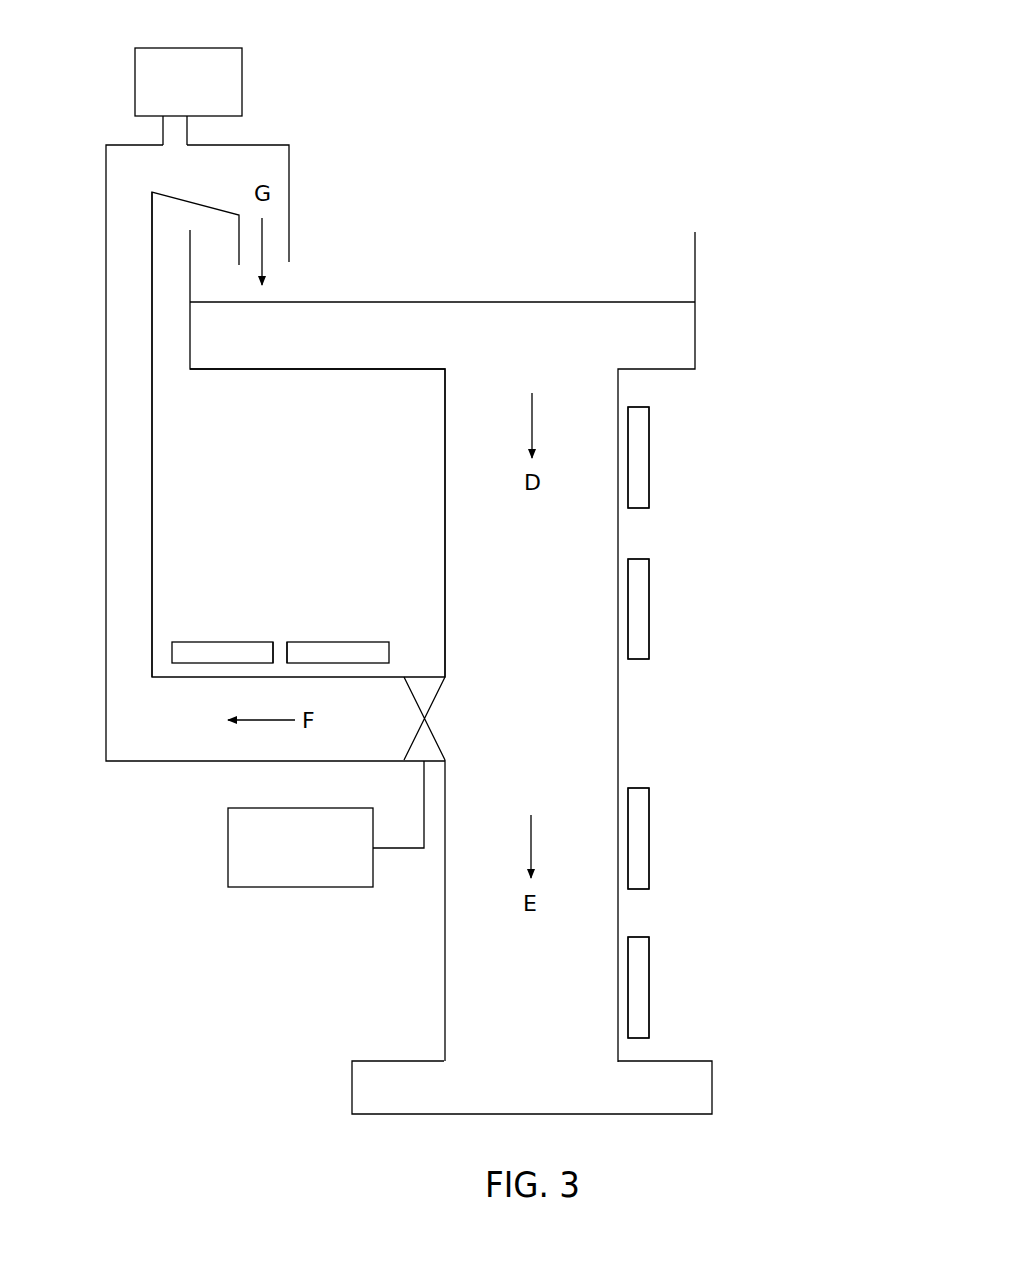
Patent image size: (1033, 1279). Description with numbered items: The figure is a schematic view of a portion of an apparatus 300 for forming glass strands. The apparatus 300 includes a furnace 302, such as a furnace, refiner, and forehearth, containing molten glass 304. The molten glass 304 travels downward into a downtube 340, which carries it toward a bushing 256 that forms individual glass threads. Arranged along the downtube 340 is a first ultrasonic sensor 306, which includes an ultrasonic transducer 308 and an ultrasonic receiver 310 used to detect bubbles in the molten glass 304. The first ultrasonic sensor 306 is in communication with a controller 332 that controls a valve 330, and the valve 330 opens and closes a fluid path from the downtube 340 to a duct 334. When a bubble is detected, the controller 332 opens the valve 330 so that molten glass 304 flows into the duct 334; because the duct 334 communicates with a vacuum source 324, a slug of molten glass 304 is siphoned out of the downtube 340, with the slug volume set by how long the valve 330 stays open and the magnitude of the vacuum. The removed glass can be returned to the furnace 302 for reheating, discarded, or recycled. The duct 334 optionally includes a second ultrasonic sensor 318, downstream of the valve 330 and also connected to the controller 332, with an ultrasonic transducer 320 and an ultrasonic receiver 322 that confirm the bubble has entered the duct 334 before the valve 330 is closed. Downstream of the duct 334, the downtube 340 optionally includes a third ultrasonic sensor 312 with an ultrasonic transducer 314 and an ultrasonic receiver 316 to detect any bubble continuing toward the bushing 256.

The apparatus 300 is at (463, 78).
The furnace 302 is at (477, 250).
The molten glass 304 is at (542, 312).
The first ultrasonic sensor 306 is at (670, 530).
The ultrasonic transducer 308 is at (637, 467).
The ultrasonic receiver 310 is at (637, 607).
The third ultrasonic sensor 312 is at (670, 916).
The ultrasonic transducer 314 is at (637, 841).
The ultrasonic receiver 316 is at (637, 980).
The second ultrasonic sensor 318 is at (280, 640).
The ultrasonic transducer 320 is at (206, 641).
The ultrasonic receiver 322 is at (345, 641).
The vacuum source 324 is at (183, 62).
The valve 330 is at (424, 720).
The controller 332 is at (315, 875).
The duct 334 is at (172, 762).
The downtube 340 is at (445, 473).
The bushing 256 is at (352, 1085).